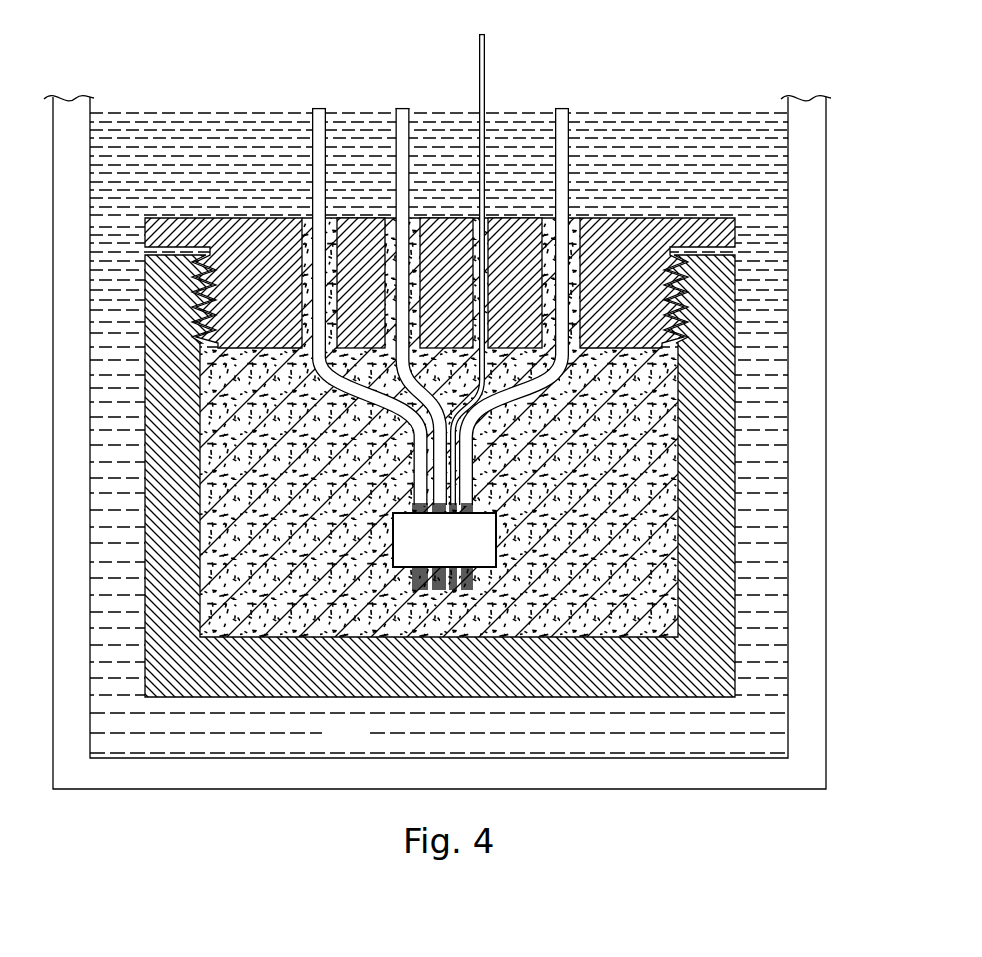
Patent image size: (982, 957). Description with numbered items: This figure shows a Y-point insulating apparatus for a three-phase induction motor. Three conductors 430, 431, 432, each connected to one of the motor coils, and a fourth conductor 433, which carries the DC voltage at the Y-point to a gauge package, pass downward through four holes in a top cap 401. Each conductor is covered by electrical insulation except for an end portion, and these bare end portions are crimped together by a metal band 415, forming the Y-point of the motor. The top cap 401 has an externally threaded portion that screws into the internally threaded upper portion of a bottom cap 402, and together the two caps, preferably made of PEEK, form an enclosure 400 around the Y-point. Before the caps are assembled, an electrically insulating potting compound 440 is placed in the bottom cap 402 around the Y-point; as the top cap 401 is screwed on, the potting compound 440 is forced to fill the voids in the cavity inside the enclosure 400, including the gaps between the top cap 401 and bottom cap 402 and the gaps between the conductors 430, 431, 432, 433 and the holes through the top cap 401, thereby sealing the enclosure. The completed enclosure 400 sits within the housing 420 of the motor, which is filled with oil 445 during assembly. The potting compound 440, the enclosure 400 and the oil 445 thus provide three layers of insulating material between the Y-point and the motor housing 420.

The enclosure 400 is at (463, 448).
The top cap 401 is at (735, 232).
The bottom cap 402 is at (735, 458).
The metal band 415 is at (496, 540).
The housing 420 is at (826, 661).
The conductor 430 is at (311, 120).
The conductor 431 is at (395, 118).
The conductor 432 is at (569, 125).
The fourth conductor 433 is at (478, 72).
The potting compound 440 is at (310, 490).
The oil 445 is at (365, 744).